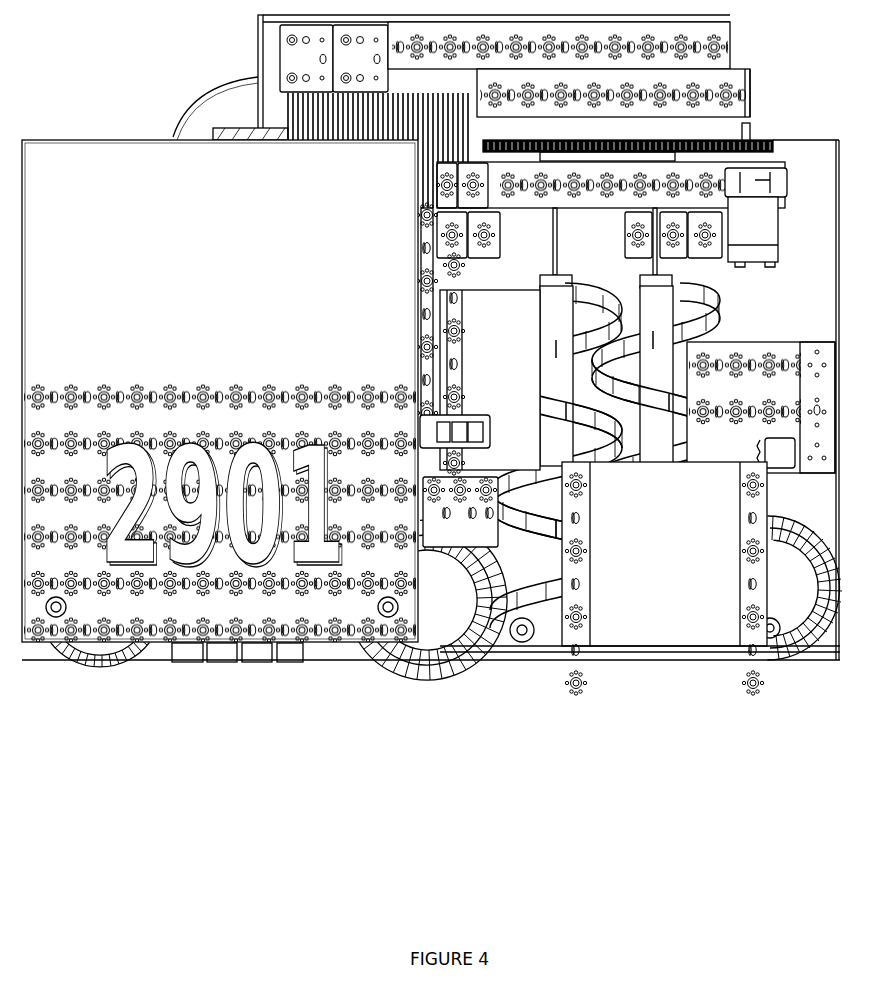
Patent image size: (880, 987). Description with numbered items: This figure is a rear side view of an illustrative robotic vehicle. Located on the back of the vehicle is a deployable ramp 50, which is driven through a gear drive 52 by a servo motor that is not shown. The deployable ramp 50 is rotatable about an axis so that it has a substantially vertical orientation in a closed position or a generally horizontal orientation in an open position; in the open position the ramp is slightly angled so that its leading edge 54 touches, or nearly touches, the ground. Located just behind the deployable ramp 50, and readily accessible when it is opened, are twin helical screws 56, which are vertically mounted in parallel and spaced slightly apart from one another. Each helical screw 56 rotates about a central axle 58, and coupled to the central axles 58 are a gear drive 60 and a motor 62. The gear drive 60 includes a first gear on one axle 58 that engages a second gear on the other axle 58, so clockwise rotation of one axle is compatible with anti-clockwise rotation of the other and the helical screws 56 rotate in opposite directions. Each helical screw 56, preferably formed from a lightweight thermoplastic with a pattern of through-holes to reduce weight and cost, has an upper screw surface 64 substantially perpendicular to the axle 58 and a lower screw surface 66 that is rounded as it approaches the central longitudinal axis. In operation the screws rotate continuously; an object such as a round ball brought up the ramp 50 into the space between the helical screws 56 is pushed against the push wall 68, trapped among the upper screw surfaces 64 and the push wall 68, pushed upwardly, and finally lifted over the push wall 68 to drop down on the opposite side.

The deployable ramp 50 is at (715, 625).
The gear drive 52 is at (767, 645).
The leading edge 54 is at (718, 487).
The helical screws 56 is at (605, 493).
The central axle 58 is at (657, 240).
The gear drive 60 is at (640, 140).
The motor 62 is at (763, 242).
The upper screw surface 64 is at (528, 375).
The lower screw surface 66 is at (532, 412).
The push wall 68 is at (483, 353).